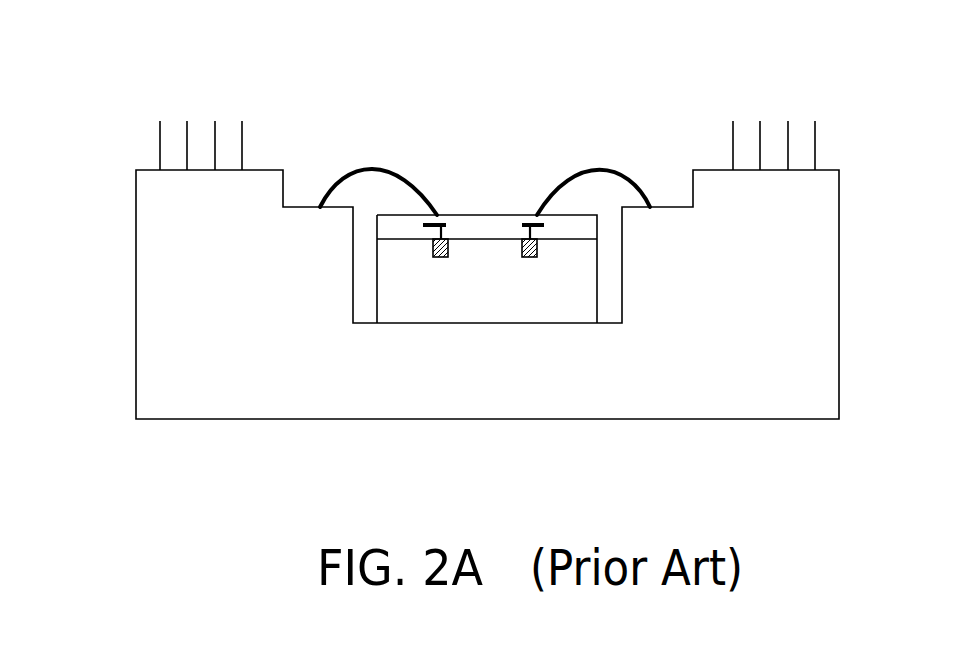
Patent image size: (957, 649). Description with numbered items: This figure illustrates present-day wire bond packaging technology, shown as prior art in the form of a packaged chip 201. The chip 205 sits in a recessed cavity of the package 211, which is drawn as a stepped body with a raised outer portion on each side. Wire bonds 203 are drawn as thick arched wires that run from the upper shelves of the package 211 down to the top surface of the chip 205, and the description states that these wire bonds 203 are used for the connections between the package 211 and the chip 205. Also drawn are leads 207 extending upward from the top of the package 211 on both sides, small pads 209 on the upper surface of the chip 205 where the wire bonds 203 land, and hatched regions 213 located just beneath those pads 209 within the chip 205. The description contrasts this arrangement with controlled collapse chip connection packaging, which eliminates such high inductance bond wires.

The chip 201 is at (856, 7).
The wire bonds 203 is at (558, 183).
The chip 205 is at (597, 293).
The leads 207 is at (190, 117).
The bond pads 209 is at (522, 230).
The package 211 is at (135, 293).
The contact regions 213 is at (528, 258).